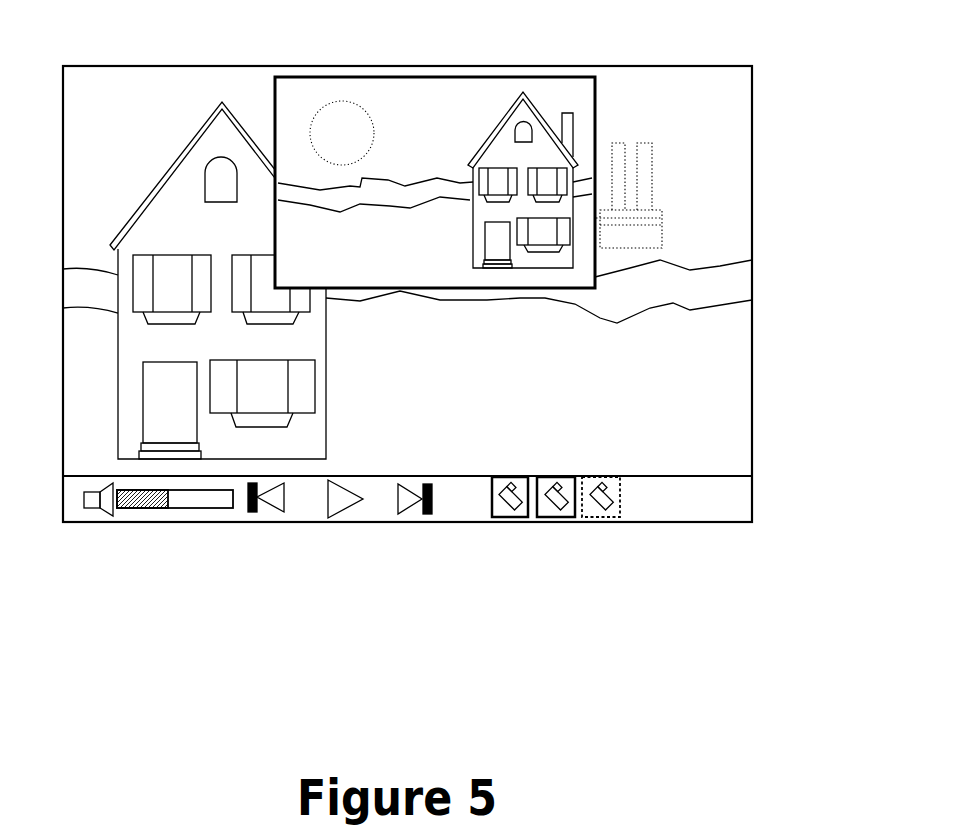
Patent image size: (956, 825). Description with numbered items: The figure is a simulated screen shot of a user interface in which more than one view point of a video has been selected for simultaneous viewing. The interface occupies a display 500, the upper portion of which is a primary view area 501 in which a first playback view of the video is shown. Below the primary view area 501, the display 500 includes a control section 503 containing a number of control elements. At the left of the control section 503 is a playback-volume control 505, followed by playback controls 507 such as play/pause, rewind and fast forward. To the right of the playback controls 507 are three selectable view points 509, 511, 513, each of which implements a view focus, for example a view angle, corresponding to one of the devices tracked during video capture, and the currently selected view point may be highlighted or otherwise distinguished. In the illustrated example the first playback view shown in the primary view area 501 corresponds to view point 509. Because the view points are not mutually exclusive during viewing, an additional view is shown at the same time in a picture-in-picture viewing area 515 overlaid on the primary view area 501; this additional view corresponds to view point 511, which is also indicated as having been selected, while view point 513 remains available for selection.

The display 500 is at (146, 101).
The primary view area 501 is at (730, 142).
The control section 503 is at (728, 498).
The playback-volume control 505 is at (100, 510).
The playback controls 507 is at (441, 512).
The view point 509 is at (507, 515).
The view point 511 is at (560, 515).
The view point 513 is at (600, 517).
The picture-in-picture viewing area 515 is at (550, 78).